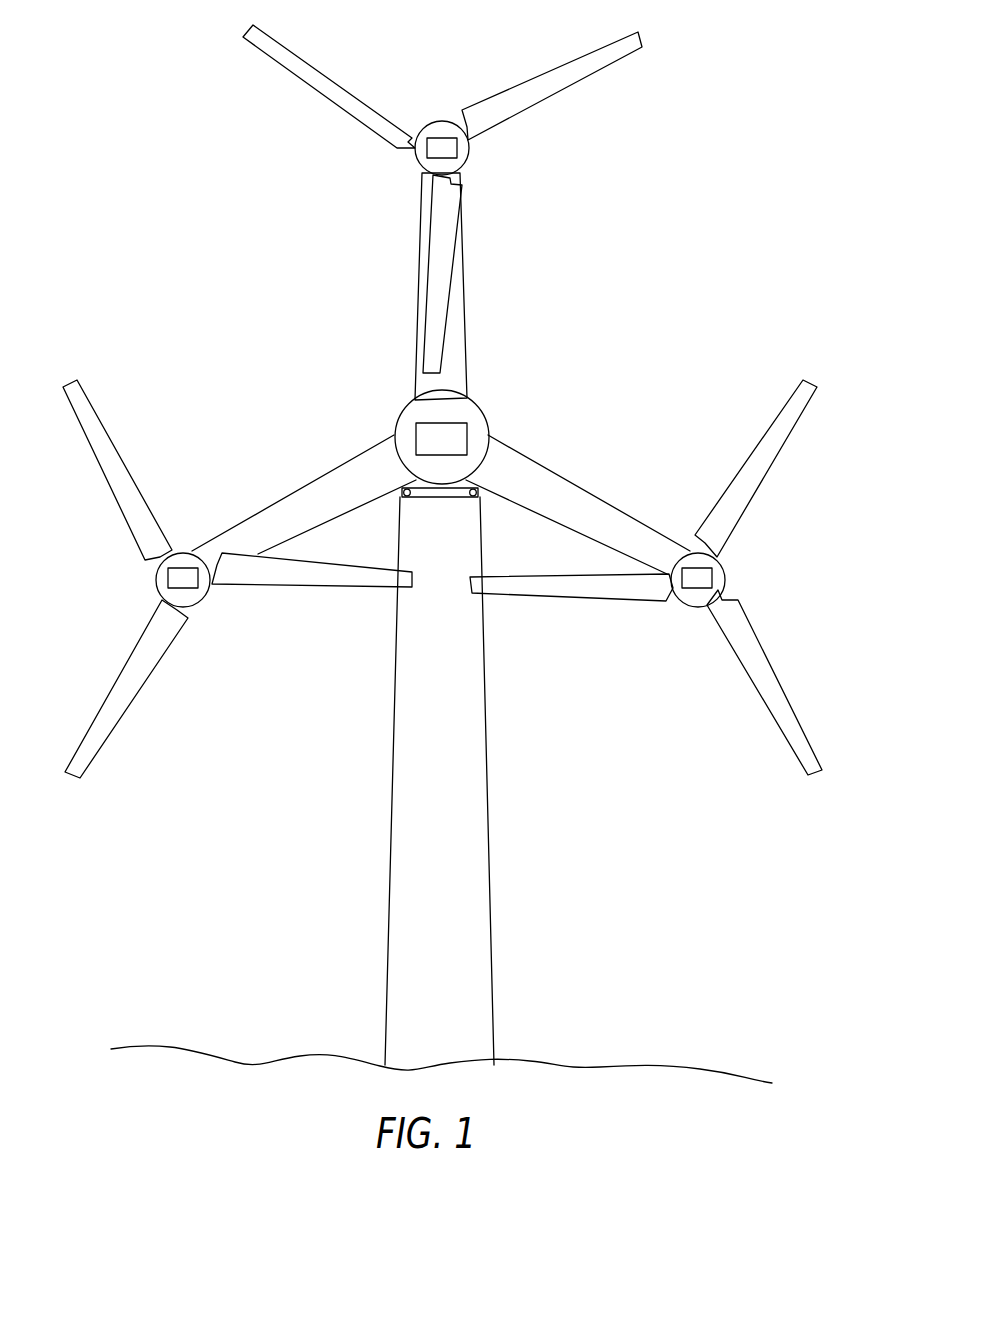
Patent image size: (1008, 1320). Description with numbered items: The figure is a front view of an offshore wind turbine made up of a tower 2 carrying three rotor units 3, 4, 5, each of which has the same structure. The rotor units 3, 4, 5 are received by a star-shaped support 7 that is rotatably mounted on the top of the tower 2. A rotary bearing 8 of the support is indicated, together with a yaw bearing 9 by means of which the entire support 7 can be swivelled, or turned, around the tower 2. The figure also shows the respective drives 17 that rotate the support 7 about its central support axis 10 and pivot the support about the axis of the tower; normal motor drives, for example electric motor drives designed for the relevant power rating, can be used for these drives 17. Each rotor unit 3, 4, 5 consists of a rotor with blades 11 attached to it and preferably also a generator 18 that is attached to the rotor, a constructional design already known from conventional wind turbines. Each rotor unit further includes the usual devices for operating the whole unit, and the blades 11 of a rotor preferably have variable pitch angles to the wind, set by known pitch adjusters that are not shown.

The tower 2 is at (464, 841).
The rotor unit 3 is at (436, 131).
The rotor unit 4 is at (720, 580).
The rotor unit 5 is at (175, 578).
The star-shaped support 7 is at (427, 265).
The rotary bearing 8 is at (441, 373).
The yaw bearing 9 is at (388, 503).
The central support axis 10 is at (427, 410).
The blades 11 is at (533, 93).
The drives 17 is at (422, 437).
The generator 18 is at (448, 372).